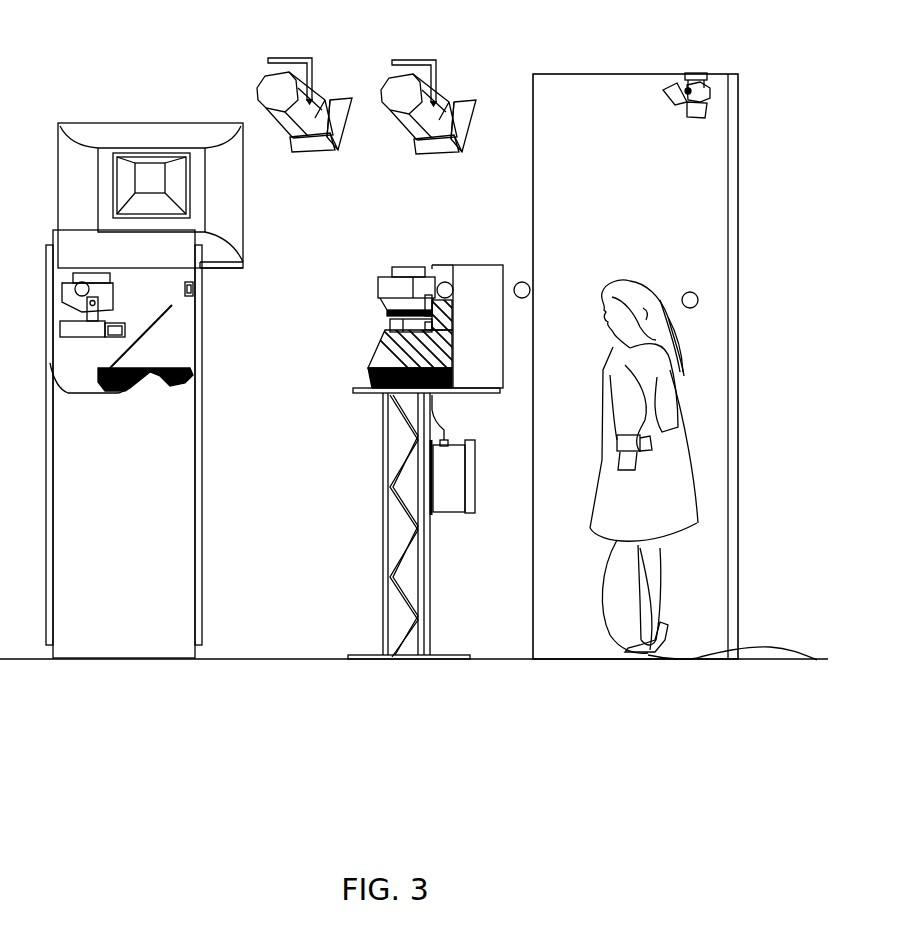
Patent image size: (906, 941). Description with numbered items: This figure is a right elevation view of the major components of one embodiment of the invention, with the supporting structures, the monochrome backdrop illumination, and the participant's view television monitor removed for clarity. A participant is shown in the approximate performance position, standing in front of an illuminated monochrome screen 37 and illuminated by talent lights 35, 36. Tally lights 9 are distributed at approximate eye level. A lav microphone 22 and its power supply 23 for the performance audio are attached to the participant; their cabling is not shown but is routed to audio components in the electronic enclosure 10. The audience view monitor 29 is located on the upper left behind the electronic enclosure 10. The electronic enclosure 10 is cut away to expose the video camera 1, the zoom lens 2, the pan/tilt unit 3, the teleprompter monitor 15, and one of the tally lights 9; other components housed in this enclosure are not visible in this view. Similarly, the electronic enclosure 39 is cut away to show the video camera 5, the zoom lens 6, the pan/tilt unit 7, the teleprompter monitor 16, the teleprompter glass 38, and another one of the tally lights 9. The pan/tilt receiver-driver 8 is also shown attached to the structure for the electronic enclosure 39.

The video camera 1 is at (60, 325).
The zoom lens 2 is at (110, 336).
The pan/tilt unit 3 is at (62, 290).
The video camera 5 is at (392, 325).
The zoom lens 6 is at (430, 326).
The pan/tilt unit 7 is at (383, 287).
The pan/tilt receiver-driver 8 is at (452, 505).
The tally lights 9 is at (84, 288).
The electronic enclosure 10 is at (182, 486).
The teleprompter monitor 15 is at (185, 368).
The teleprompter monitor 16 is at (368, 380).
The lav microphone 22 is at (613, 352).
The power supply 23 is at (634, 466).
The audience view monitor 29 is at (88, 125).
The talent lights 35 is at (272, 89).
The talent light 36 is at (687, 106).
The illuminated monochrome screen 37 is at (608, 78).
The teleprompter glass 38 is at (160, 318).
The electronic enclosure 39 is at (468, 388).